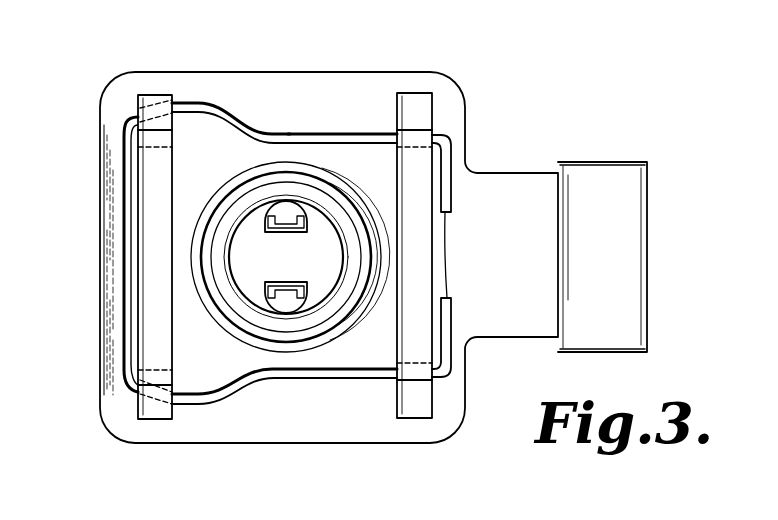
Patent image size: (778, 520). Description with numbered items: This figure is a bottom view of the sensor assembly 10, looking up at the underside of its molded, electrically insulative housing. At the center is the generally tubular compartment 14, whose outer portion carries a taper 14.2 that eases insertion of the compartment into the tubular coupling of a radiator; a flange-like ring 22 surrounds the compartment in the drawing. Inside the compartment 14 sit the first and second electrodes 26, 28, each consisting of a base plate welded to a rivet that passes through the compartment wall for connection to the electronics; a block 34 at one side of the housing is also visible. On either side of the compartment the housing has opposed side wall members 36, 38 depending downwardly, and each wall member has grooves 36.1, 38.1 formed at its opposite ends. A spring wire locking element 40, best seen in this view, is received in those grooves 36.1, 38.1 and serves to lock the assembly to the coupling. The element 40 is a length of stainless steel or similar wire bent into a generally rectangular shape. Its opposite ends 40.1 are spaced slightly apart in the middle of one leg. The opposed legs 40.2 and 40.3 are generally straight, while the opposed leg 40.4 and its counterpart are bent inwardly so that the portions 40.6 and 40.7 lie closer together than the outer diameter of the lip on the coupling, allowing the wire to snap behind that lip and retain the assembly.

The sensor assembly 10 is at (116, 69).
The tubular compartment 14 is at (333, 212).
The taper 14.2 is at (330, 323).
The connector flange 22 is at (238, 186).
The first electrode 26 is at (286, 286).
The second electrode 28 is at (272, 229).
The cable entry block 34 is at (532, 192).
The side wall member 36 is at (168, 195).
The groove 36.1 is at (174, 142).
The side wall member 38 is at (424, 200).
The groove 38.1 is at (437, 138).
The spring wire locking element 40 is at (124, 364).
The opposite ends 40.1 is at (447, 250).
The leg 40.2 is at (124, 246).
The leg 40.3 is at (452, 190).
The leg 40.4 is at (232, 119).
The inwardly bent portion 40.6 is at (342, 122).
The inwardly bent portion 40.7 is at (300, 380).